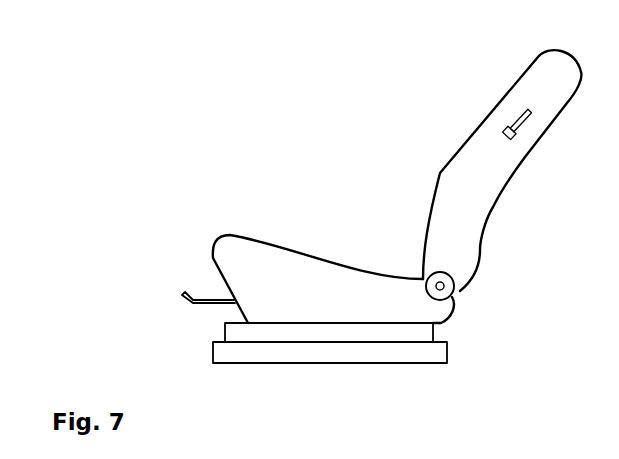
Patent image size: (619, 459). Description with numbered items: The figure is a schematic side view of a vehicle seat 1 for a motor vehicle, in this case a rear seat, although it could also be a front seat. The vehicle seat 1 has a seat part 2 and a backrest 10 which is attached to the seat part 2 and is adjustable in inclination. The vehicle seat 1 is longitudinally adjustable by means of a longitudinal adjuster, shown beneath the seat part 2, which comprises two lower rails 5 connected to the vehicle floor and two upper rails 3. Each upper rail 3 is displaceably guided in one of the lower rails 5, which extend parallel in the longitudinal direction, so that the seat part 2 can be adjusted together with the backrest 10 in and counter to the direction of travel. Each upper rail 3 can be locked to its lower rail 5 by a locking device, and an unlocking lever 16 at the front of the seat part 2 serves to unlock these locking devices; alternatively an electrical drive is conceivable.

The vehicle seat 1 is at (202, 195).
The seat part 2 is at (323, 275).
The upper rails 3 is at (418, 330).
The lower rails 5 is at (418, 348).
The backrest 10 is at (457, 202).
The unlocking lever 16 is at (185, 297).